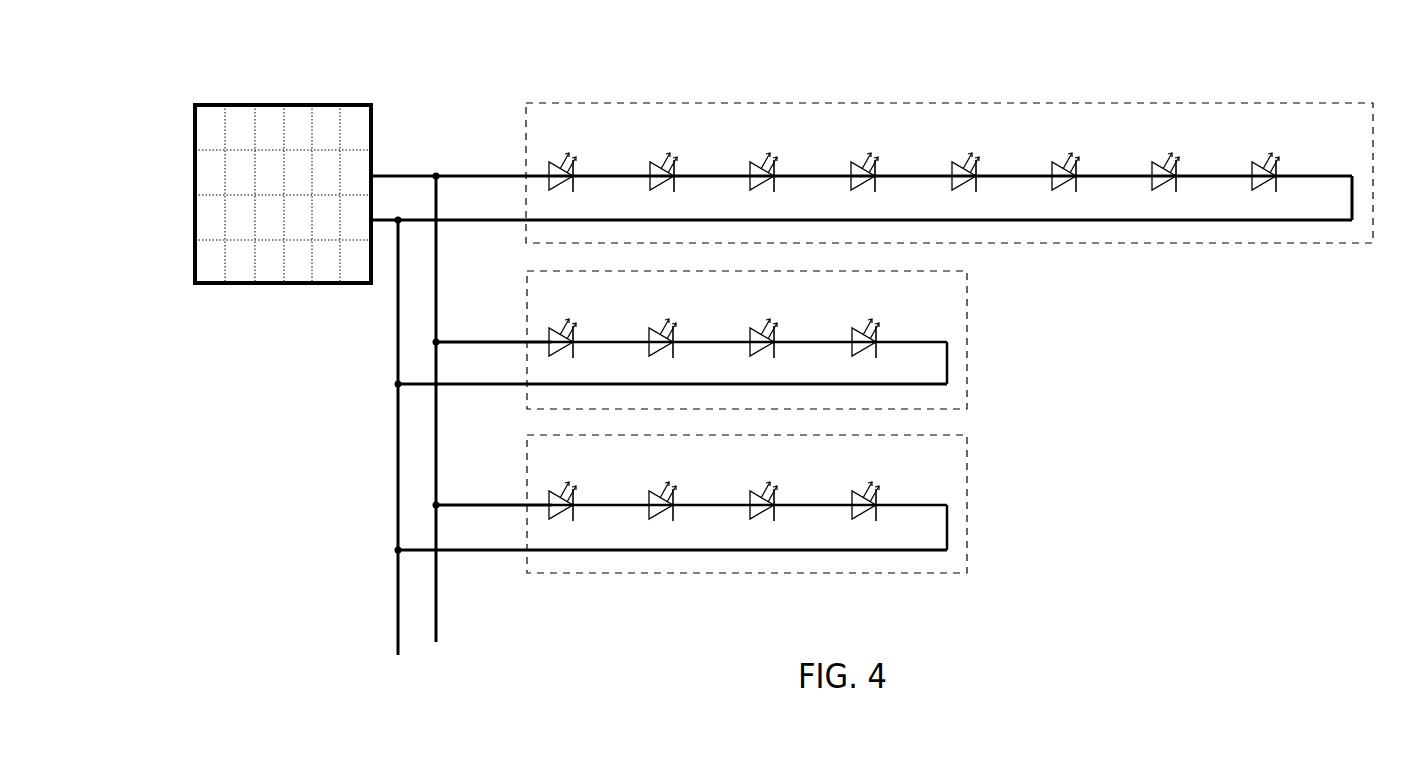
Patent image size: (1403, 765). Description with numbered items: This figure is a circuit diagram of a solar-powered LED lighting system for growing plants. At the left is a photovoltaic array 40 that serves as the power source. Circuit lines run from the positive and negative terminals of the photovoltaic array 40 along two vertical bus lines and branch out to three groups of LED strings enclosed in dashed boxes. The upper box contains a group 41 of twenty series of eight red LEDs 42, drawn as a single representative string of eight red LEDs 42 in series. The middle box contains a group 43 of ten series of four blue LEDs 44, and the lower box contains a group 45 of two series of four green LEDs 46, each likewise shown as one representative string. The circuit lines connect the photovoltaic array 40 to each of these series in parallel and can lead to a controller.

The photovoltaic array 40 is at (306, 105).
The group of twenty series of eight red LEDs 41 is at (949, 150).
The red LED 42 is at (1050, 184).
The group of ten series of four blue LEDs 43 is at (792, 340).
The blue LED 44 is at (852, 348).
The group of two series of four green LEDs 45 is at (783, 504).
The green LED 46 is at (853, 512).